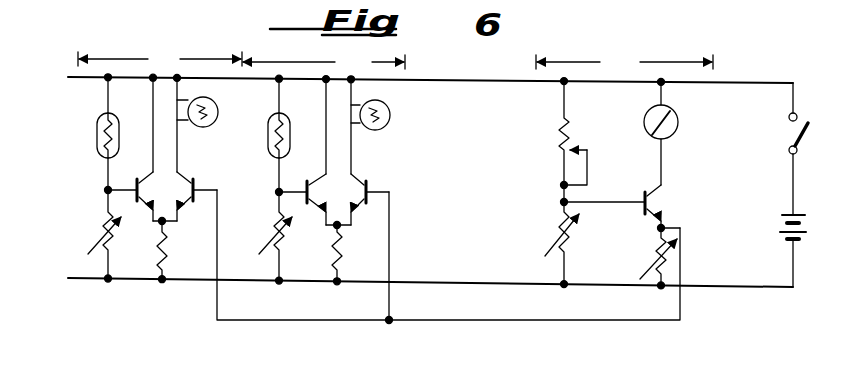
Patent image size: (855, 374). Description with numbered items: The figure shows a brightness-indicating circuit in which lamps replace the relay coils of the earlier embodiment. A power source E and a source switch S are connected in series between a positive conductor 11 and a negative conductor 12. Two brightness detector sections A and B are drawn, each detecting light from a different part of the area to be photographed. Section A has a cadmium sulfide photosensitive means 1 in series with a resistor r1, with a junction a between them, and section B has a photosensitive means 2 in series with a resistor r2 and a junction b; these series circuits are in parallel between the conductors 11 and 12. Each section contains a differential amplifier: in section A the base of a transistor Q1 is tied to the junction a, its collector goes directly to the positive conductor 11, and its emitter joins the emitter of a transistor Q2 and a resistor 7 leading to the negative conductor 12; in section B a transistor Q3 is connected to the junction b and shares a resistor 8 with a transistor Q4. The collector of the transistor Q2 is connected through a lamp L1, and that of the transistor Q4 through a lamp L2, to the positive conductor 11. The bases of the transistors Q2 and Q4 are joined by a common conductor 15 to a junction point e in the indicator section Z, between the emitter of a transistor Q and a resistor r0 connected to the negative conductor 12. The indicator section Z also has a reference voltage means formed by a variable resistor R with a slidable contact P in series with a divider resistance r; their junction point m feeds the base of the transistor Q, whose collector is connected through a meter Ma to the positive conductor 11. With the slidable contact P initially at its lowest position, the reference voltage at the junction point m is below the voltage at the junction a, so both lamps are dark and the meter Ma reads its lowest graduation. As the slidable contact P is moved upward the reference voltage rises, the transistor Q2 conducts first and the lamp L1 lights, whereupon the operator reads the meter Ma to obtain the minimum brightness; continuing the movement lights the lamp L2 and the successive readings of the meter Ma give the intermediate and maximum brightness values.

The photosensitive means 1 is at (96, 149).
The photosensitive means 2 is at (267, 151).
The resistor 7 is at (169, 249).
The resistor 8 is at (344, 248).
The positive conductor 11 is at (456, 80).
The negative conductor 12 is at (455, 283).
The common conductor 15 is at (540, 322).
The circuit section A is at (160, 60).
The circuit section B is at (324, 63).
The indicator section Z is at (624, 63).
The lamp L1 is at (218, 105).
The lamp L2 is at (390, 110).
The transistor Q1 is at (136, 149).
The transistor Q2 is at (196, 182).
The transistor Q3 is at (310, 151).
The transistor Q4 is at (371, 188).
The transistor Q is at (663, 198).
The variable resistor R is at (558, 142).
The slidable contact P is at (588, 148).
The meter Ma is at (677, 129).
The source switch S is at (807, 135).
The power source E is at (782, 236).
The junction a is at (105, 191).
The junction b is at (276, 195).
The junction point m is at (562, 202).
The junction point e is at (668, 226).
The divider resistance r is at (555, 233).
The resistor r1 is at (94, 242).
The resistor r2 is at (284, 244).
The resistor r0 is at (653, 262).